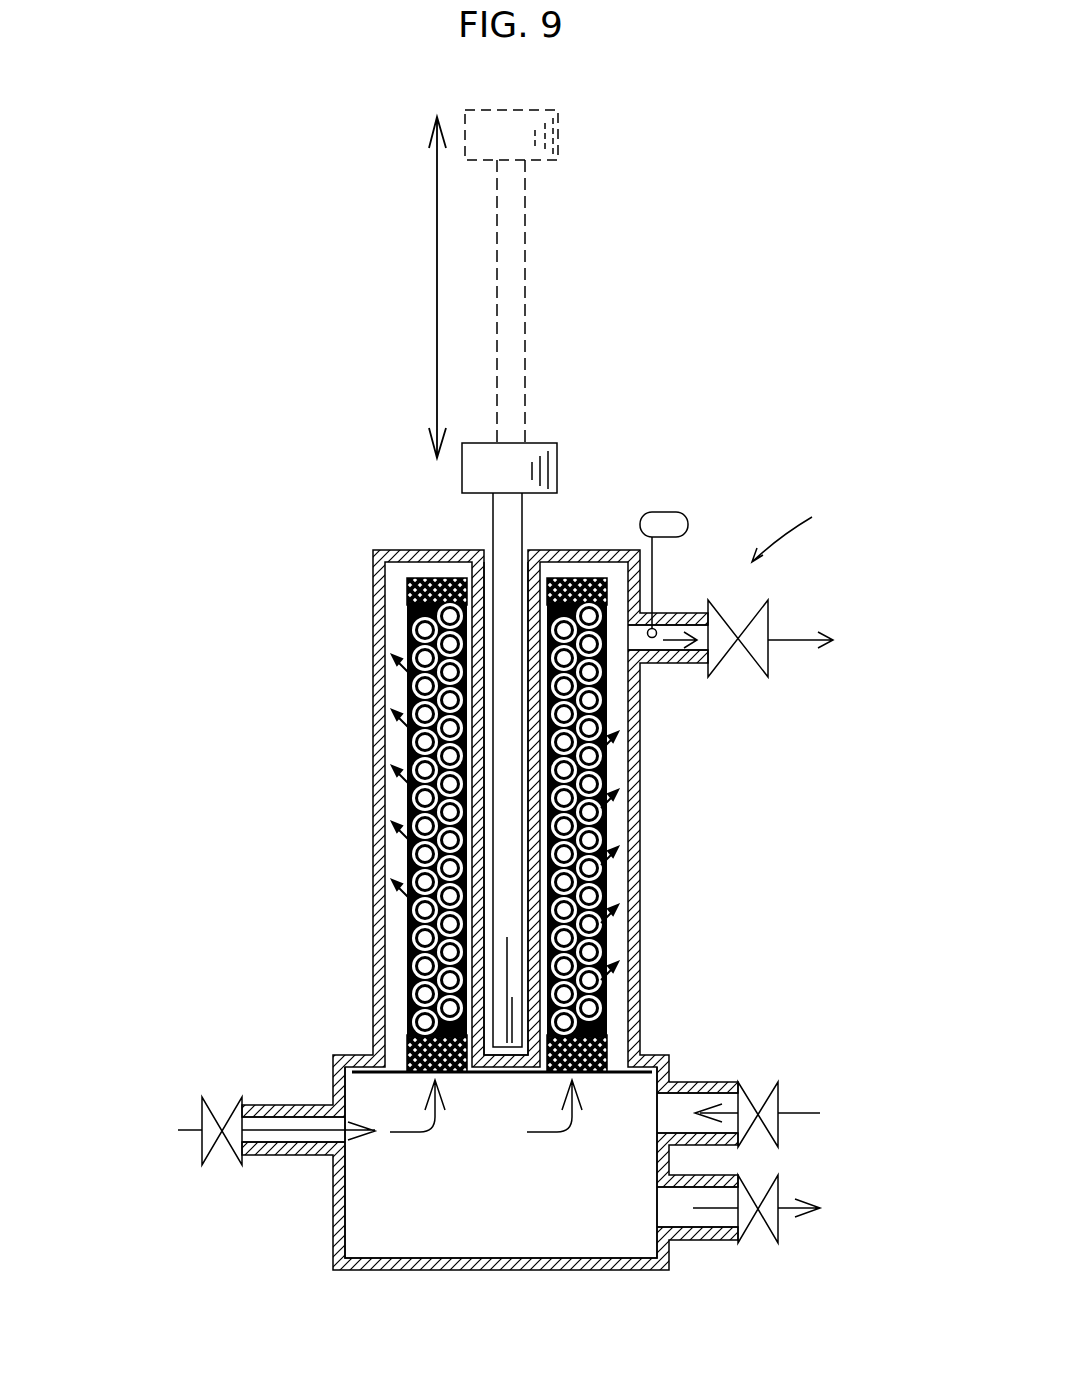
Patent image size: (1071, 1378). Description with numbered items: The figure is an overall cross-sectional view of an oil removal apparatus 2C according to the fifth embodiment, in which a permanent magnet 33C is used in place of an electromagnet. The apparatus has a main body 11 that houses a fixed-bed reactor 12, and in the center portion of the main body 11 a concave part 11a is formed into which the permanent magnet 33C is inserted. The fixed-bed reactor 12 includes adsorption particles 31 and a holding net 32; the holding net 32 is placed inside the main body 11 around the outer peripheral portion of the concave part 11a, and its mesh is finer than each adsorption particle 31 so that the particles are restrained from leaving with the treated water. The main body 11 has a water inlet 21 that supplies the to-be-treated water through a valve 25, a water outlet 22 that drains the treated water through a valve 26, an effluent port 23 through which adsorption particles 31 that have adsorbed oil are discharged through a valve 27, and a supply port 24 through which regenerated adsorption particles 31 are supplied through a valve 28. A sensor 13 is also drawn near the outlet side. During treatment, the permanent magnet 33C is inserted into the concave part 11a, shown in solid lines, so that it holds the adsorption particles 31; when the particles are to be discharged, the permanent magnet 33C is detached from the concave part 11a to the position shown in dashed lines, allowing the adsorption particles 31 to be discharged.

The oil removal apparatus 2C is at (803, 529).
The main body 11 is at (637, 988).
The concave part 11a is at (488, 577).
The fixed-bed reactor 12 is at (468, 1113).
The pressure sensor 13 is at (688, 525).
The water inlet 21 is at (290, 1157).
The water outlet 22 is at (660, 663).
The effluent port 23 is at (700, 1240).
The supply port 24 is at (709, 1083).
The valve 25 is at (198, 1157).
The valve 26 is at (770, 663).
The valve 27 is at (783, 1233).
The valve 28 is at (782, 1093).
The adsorption particles 31 is at (412, 651).
The holding net 32 is at (418, 577).
The permanent magnet 33C is at (525, 332).